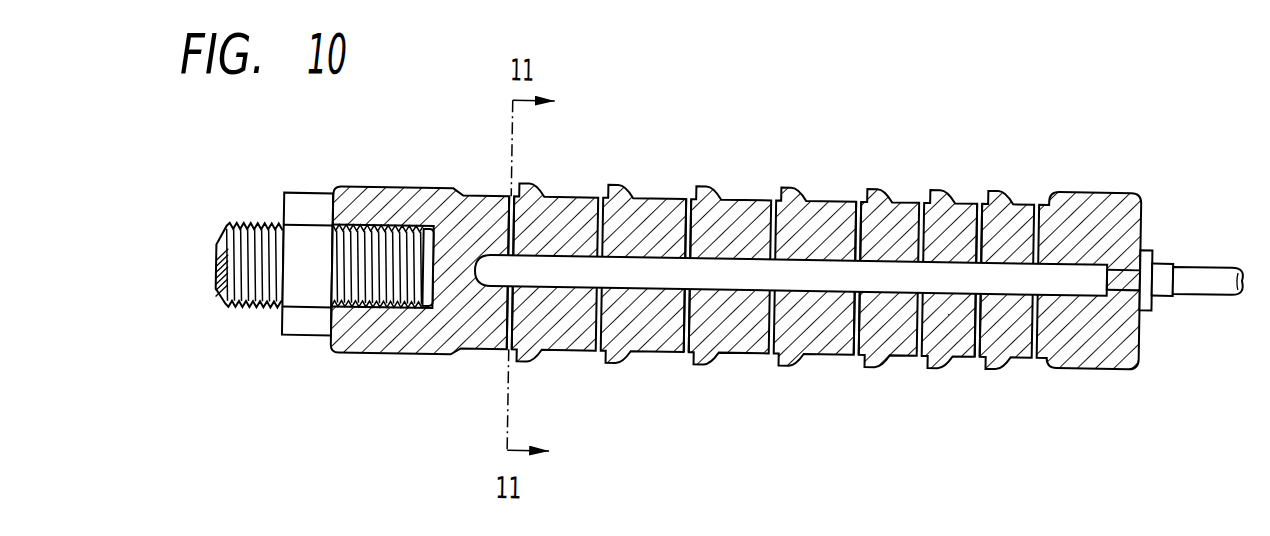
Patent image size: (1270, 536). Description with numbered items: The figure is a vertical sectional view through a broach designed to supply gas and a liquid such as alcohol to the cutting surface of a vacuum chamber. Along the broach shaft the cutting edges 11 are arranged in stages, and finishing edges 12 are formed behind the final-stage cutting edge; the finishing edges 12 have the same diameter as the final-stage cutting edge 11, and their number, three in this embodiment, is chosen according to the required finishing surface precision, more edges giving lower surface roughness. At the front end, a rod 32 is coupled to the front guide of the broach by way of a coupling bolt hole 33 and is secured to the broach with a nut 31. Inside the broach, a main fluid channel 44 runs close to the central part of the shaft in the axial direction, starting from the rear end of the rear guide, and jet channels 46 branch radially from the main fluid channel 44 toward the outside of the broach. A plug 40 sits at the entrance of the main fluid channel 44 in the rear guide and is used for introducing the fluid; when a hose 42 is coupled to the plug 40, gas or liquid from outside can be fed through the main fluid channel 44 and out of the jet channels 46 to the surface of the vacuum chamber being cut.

The cutting edge 11 is at (784, 186).
The finishing edge 12 is at (991, 186).
The nut 31 is at (309, 199).
The rod 32 is at (247, 231).
The coupling bolt hole 33 is at (397, 247).
The plug 40 is at (1163, 256).
The hose 42 is at (1220, 259).
The main fluid channel 44 is at (821, 270).
The jet channel 46 is at (512, 229).